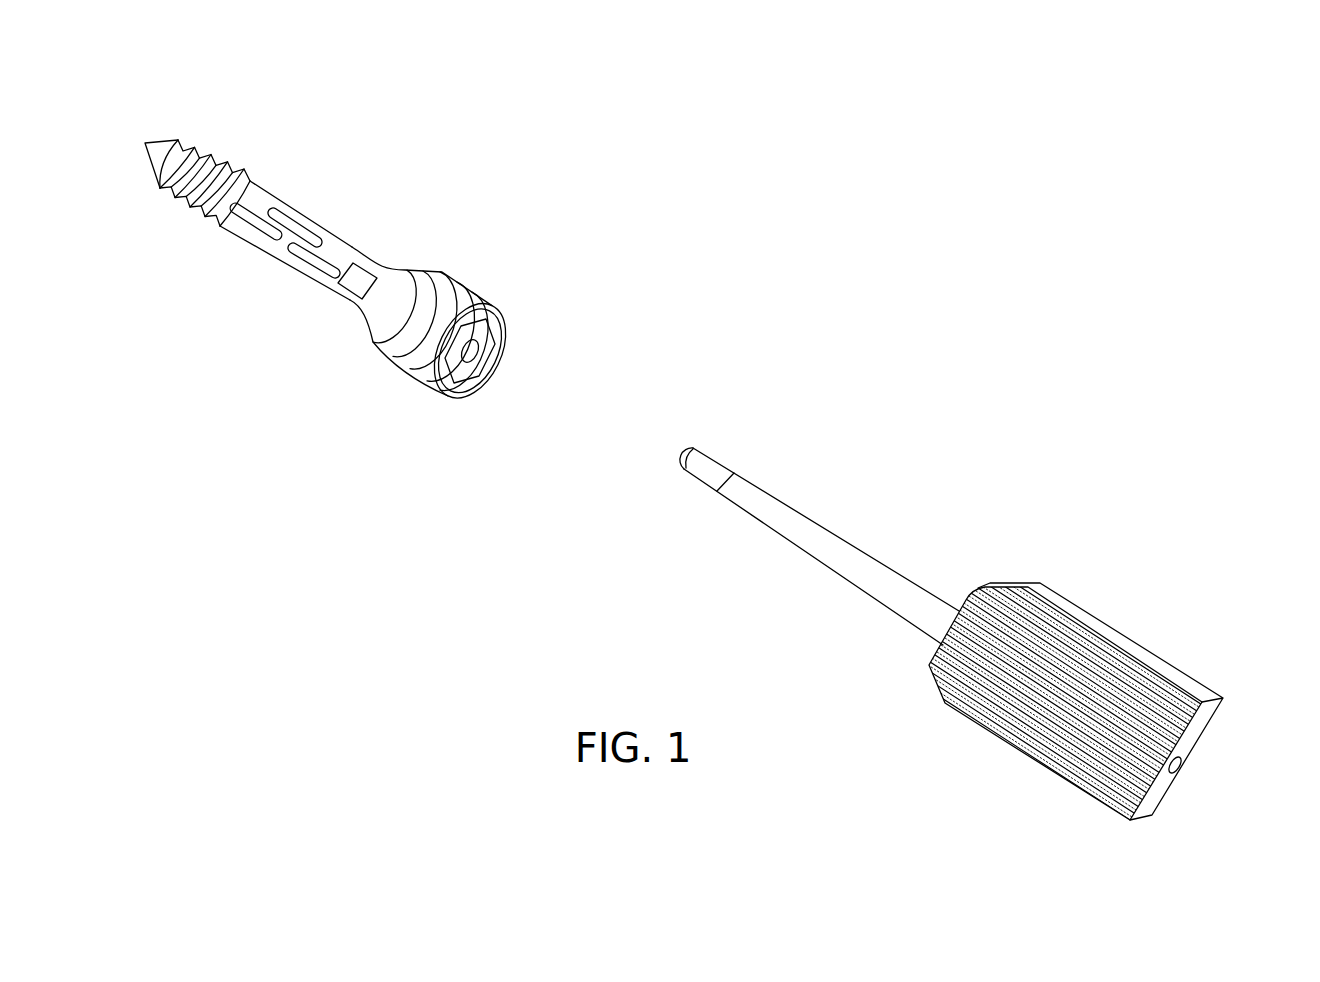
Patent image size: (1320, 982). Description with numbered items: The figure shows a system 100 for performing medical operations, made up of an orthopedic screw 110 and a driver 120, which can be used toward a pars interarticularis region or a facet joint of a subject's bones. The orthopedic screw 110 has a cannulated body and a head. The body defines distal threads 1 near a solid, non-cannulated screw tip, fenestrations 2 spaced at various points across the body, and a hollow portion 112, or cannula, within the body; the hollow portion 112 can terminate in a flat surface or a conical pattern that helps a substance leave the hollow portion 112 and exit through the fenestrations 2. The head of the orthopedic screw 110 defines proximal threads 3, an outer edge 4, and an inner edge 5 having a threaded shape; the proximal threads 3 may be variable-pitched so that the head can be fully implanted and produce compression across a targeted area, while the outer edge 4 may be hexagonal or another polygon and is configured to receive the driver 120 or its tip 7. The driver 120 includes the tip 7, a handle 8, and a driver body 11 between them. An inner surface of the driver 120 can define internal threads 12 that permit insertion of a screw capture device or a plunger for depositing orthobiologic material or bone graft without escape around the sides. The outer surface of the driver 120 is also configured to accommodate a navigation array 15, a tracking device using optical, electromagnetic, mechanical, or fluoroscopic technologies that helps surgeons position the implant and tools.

The system 100 is at (942, 81).
The orthopedic screw 110 is at (530, 138).
The distal threads 1 is at (219, 156).
The fenestrations 2 is at (299, 222).
The navigation array 15 is at (364, 268).
The proximal threads 3 is at (452, 279).
The outer edge 4 is at (466, 392).
The inner edge 5 is at (490, 333).
The hollow portion 112 is at (479, 357).
The driver 120 is at (1133, 520).
The tip 7 is at (694, 477).
The driver body 11 is at (798, 547).
The handle 8 is at (1010, 743).
The internal threads 12 is at (1184, 770).